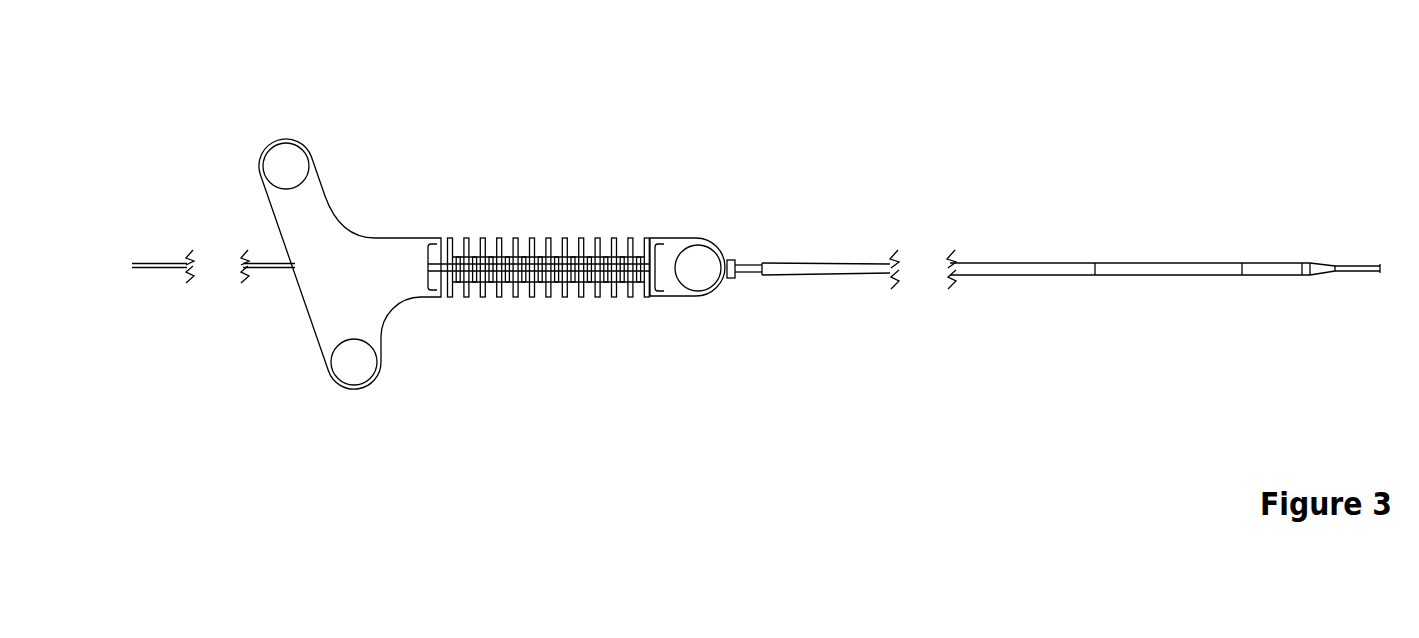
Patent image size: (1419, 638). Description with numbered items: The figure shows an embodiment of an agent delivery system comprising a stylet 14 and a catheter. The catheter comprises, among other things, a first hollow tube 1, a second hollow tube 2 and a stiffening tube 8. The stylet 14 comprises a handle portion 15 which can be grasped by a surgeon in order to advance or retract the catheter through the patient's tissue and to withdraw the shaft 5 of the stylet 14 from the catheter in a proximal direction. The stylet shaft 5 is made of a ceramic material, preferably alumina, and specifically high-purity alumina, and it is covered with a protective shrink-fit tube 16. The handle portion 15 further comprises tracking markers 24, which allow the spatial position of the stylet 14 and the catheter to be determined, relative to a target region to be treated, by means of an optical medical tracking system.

The first hollow tube 1 is at (1035, 268).
The second hollow tube 2 is at (167, 264).
The shaft 5 is at (748, 272).
The stiffening tube 8 is at (1352, 265).
The stylet 14 is at (784, 136).
The handle portion 15 is at (377, 260).
The protective shrink-fit tube 16 is at (742, 250).
The tracking markers 24 is at (284, 164).